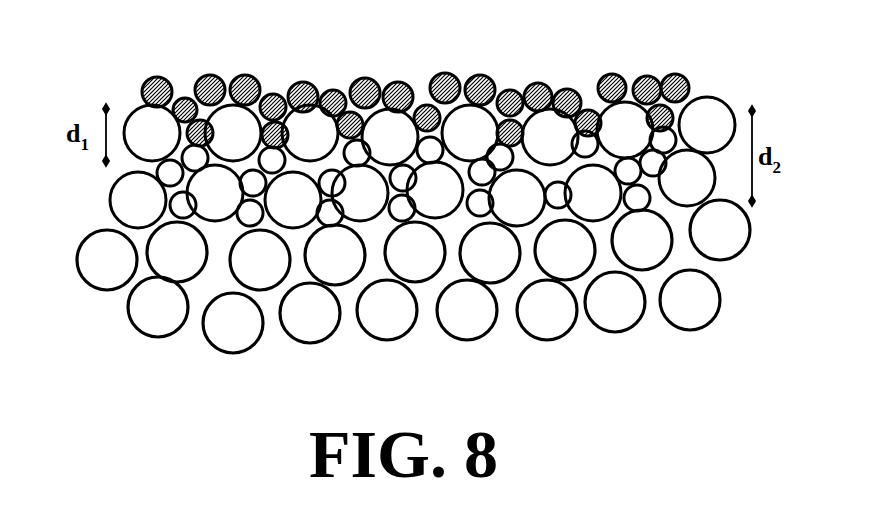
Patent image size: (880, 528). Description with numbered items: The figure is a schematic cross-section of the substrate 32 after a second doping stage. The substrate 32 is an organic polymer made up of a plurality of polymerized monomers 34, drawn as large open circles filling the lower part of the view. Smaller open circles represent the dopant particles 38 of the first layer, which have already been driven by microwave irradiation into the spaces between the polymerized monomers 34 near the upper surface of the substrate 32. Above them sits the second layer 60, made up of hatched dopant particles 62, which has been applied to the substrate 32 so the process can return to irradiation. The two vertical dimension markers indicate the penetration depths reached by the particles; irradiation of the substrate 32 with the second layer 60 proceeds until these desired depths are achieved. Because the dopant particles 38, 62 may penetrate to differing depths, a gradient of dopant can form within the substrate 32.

The substrate 32 is at (130, 103).
The polymerized monomers 34 is at (202, 342).
The dopant particles 38 is at (558, 194).
The second layer 60 is at (433, 76).
The dopant particles 62 is at (390, 83).